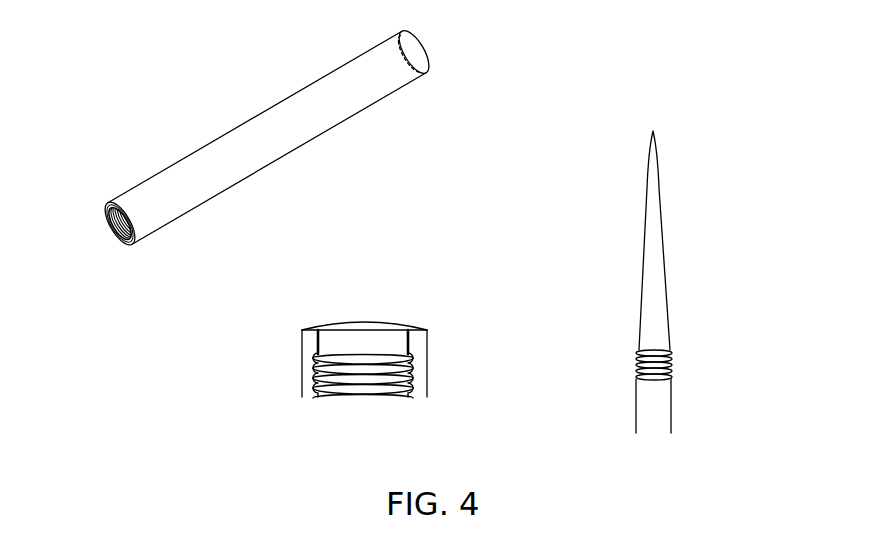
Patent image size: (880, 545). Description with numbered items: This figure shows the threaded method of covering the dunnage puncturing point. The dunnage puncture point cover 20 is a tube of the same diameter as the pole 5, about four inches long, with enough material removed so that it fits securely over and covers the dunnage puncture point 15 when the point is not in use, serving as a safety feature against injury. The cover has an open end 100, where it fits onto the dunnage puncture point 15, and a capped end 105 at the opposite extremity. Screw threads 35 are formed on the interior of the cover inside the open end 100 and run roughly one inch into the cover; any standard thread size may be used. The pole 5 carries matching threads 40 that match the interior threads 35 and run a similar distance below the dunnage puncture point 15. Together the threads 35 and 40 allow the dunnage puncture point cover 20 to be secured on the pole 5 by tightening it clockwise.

The pole 5 is at (654, 411).
The dunnage puncture point 15 is at (653, 188).
The dunnage puncture point cover 20 is at (230, 172).
The screw threads 35 is at (128, 243).
The matching threads 40 is at (672, 370).
The open end 100 is at (110, 219).
The capped end 105 is at (428, 45).